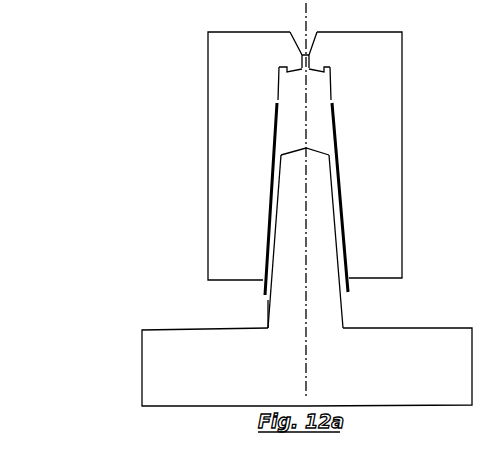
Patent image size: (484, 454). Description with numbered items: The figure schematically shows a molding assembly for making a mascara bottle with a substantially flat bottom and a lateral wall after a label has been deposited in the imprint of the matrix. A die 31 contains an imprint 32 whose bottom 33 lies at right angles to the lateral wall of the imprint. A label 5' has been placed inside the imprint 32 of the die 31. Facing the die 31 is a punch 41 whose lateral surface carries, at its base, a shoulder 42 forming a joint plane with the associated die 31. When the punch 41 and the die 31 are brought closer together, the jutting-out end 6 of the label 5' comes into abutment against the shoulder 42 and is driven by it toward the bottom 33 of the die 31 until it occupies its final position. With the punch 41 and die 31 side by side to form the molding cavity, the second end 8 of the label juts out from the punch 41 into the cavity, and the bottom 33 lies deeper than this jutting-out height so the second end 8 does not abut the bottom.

The die 31 is at (240, 141).
The imprint 32 is at (318, 128).
The bottom 33 is at (310, 64).
The second end 8 is at (334, 100).
The label 5' is at (190, 212).
The jutting-out end 6 is at (262, 290).
The punch 41 is at (333, 308).
The shoulder 42 is at (264, 330).